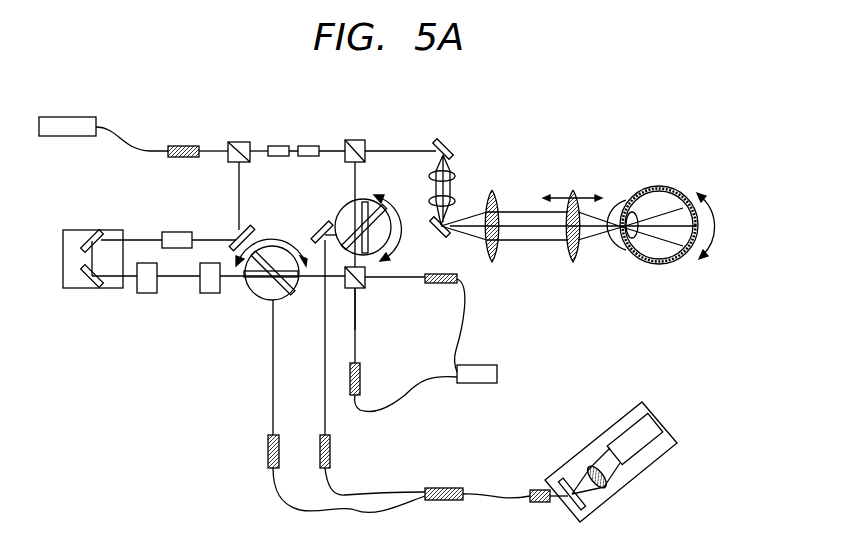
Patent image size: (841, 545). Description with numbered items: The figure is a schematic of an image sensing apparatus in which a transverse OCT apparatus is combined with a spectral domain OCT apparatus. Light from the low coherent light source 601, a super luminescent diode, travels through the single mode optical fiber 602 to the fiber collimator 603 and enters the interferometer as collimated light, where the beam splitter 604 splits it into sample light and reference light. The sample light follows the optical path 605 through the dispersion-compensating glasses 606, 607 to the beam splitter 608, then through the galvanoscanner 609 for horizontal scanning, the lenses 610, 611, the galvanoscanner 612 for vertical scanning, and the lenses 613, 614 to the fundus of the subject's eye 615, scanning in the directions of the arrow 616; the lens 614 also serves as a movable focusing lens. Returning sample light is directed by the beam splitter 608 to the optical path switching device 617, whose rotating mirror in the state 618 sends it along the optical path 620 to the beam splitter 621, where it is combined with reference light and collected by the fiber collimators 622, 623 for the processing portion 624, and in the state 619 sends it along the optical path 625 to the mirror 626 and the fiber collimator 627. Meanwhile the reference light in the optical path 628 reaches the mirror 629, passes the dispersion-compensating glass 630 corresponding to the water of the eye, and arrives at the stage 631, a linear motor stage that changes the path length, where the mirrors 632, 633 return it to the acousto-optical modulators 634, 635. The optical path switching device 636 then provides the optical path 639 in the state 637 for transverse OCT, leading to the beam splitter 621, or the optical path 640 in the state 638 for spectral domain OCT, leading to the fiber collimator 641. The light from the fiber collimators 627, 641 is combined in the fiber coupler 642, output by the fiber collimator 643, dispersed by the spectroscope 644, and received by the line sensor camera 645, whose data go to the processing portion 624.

The low coherent light source 601 is at (68, 117).
The single mode optical fiber 602 is at (143, 149).
The fiber collimator 603 is at (182, 146).
The beam splitter 604 is at (239, 142).
The optical path 605 is at (256, 163).
The dispersion-compensating glass 606 is at (279, 146).
The dispersion-compensating glass 607 is at (308, 146).
The beam splitter 608 is at (354, 140).
The galvanoscanner 609 is at (448, 140).
The lens 610 is at (456, 176).
The lens 611 is at (456, 201).
The galvanoscanner 612 is at (432, 220).
The lens 613 is at (492, 263).
The lens 614 is at (573, 189).
The subject's eye 615 is at (658, 185).
The arrow 616 is at (710, 222).
The optical path switching device 617 is at (372, 215).
The state 618 is at (348, 220).
The state 619 is at (392, 212).
The optical path 620 is at (367, 278).
The beam splitter 621 is at (356, 290).
The fiber collimator 622 is at (360, 380).
The fiber collimator 623 is at (439, 284).
The processing portion 624 is at (477, 383).
The optical path 625 is at (362, 289).
The mirror 626 is at (318, 226).
The fiber collimator 627 is at (330, 452).
The optical path 628 is at (237, 178).
The mirror 629 is at (250, 230).
The dispersion-compensating glass 630 is at (177, 232).
The stage 631 is at (80, 230).
The mirror 632 is at (83, 243).
The mirror 633 is at (85, 272).
The acousto-optical modulator 634 is at (146, 293).
The acousto-optical modulator 635 is at (210, 293).
The optical path switching device 636 is at (265, 290).
The state 637 is at (252, 296).
The state 638 is at (274, 295).
The optical path 639 is at (303, 282).
The optical path 640 is at (273, 416).
The fiber collimator 641 is at (268, 452).
The fiber coupler 642 is at (443, 488).
The fiber collimator 643 is at (535, 490).
The spectroscope 644 is at (562, 480).
The line sensor camera 645 is at (622, 434).